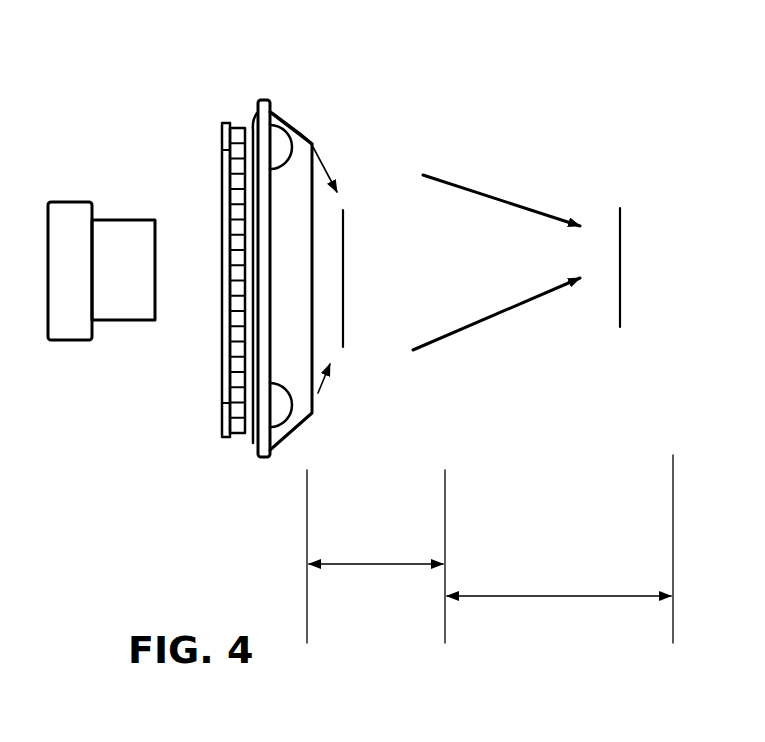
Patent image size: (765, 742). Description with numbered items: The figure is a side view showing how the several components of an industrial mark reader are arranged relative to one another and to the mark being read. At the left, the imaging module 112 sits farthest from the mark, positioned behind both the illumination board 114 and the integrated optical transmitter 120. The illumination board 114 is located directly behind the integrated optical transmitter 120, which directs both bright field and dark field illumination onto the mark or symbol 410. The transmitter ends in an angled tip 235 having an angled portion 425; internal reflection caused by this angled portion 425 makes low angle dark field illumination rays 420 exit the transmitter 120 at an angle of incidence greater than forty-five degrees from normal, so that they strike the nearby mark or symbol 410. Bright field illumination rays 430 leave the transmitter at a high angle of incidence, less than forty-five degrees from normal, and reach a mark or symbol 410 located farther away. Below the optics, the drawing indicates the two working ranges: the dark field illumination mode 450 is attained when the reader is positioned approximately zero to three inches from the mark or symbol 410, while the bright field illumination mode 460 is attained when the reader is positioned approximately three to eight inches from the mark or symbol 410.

The imaging module 112 is at (62, 200).
The illumination board 114 is at (225, 82).
The integrated optical transmitter 120 is at (284, 66).
The angled tip 235 is at (313, 146).
The angled portion 425 is at (290, 135).
The dark field illumination rays 420 is at (326, 166).
The mark or symbol 410 is at (345, 278).
The bright field illumination rays 430 is at (492, 193).
The dark field illumination mode 450 is at (370, 568).
The bright field illumination mode 460 is at (548, 600).